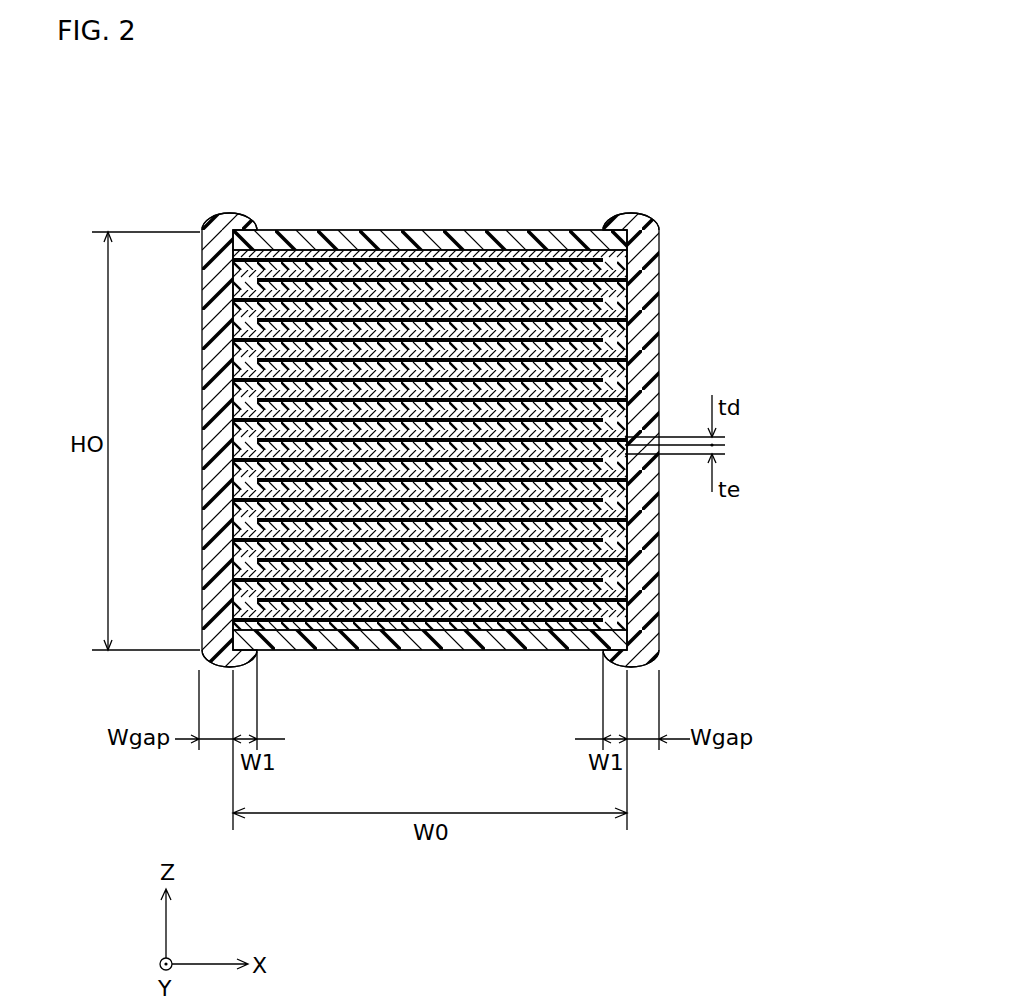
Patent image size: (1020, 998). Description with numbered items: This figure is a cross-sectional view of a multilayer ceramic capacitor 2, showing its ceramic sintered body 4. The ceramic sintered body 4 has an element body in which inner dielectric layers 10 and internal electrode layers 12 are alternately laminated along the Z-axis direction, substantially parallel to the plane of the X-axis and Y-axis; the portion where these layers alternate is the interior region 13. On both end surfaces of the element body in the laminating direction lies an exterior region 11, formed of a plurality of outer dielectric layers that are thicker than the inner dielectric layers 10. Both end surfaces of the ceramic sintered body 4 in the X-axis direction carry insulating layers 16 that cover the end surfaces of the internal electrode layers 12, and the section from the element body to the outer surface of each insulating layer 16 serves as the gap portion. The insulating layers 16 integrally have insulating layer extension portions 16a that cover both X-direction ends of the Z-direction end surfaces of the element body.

The multilayer ceramic capacitor 2 is at (625, 175).
The ceramic sintered body 4 is at (500, 203).
The inner dielectric layer 10 is at (620, 270).
The exterior region 11 is at (424, 230).
The internal electrode layer 12 is at (622, 244).
The interior region 13 is at (187, 250).
The insulating layer 16 is at (228, 213).
The insulating layer extension portion 16a is at (248, 215).